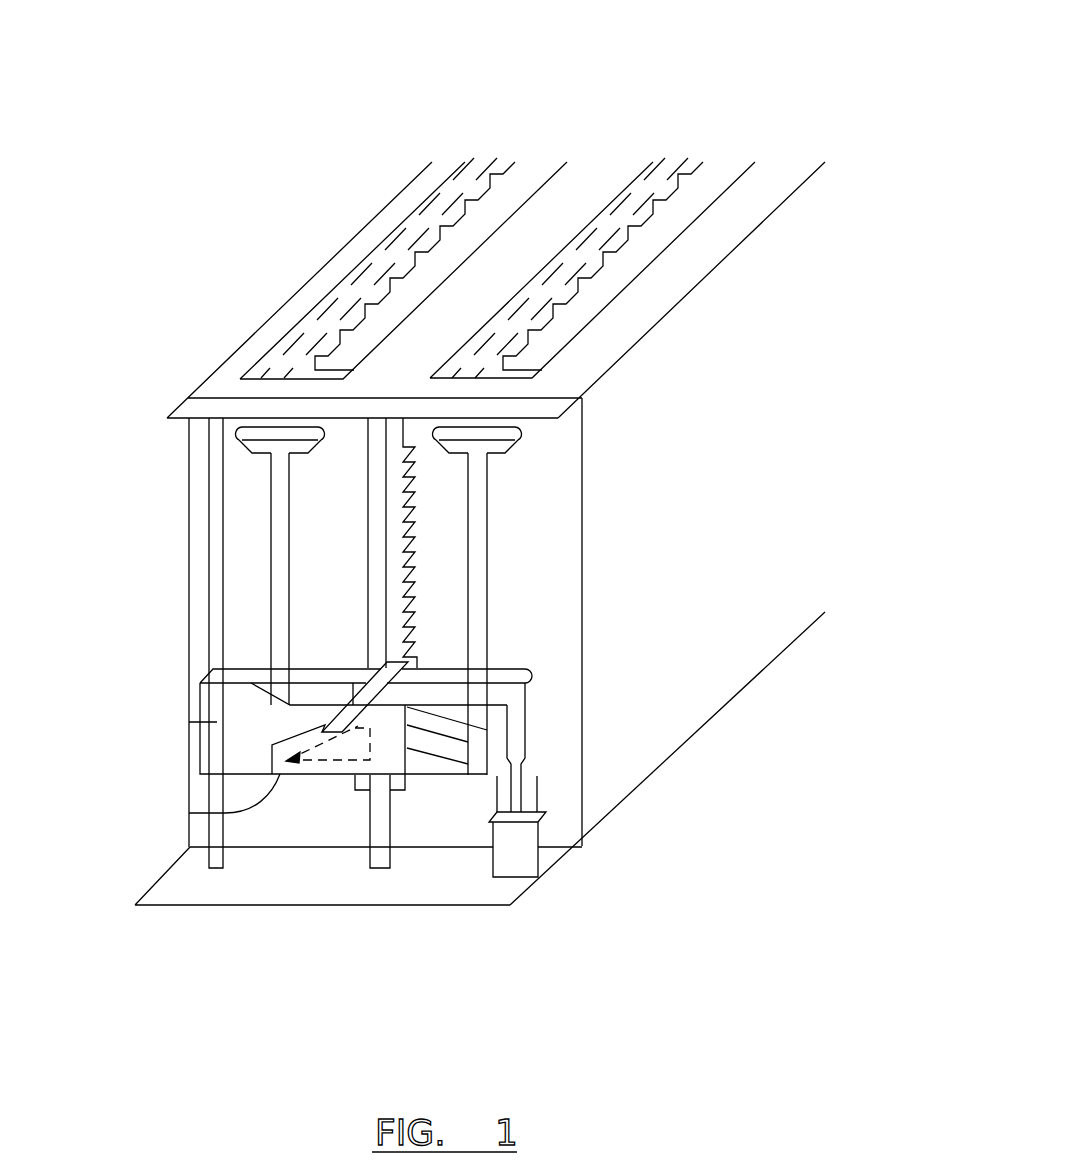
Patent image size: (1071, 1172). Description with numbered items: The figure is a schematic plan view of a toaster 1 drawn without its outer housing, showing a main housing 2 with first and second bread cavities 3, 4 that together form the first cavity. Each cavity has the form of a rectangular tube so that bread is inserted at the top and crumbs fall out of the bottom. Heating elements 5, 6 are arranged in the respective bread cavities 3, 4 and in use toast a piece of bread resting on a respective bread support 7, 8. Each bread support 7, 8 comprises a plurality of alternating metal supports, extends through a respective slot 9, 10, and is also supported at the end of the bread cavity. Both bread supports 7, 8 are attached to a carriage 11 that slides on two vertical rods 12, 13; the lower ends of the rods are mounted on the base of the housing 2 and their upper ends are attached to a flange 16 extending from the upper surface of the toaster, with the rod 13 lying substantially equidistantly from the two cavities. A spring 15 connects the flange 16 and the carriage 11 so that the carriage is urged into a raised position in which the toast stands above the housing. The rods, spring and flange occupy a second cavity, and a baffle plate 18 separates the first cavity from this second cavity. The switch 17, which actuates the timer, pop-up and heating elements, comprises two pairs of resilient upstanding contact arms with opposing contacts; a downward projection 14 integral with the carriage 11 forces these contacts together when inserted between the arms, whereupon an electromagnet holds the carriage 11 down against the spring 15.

The toaster 1 is at (176, 572).
The main housing 2 is at (710, 680).
The first bread cavity 3 is at (498, 158).
The second bread cavity 4 is at (688, 152).
The heating element 5 is at (478, 192).
The heating element 6 is at (647, 188).
The bread support 7 is at (518, 167).
The bread support 8 is at (710, 163).
The slot 9 is at (278, 507).
The slot 10 is at (478, 545).
The carriage 11 is at (199, 752).
The vertical rod 12 is at (206, 650).
The vertical rod 13 is at (382, 612).
The downward projection 14 is at (518, 728).
The spring 15 is at (415, 508).
The flange 16 is at (580, 410).
The switch 17 is at (518, 862).
The baffle plate 18 is at (341, 577).